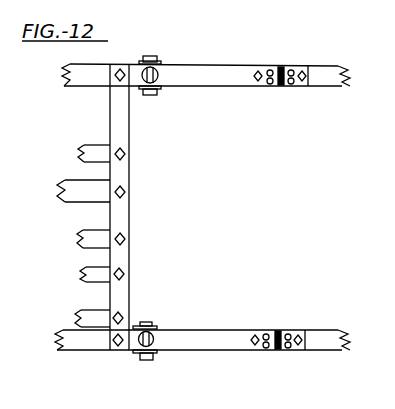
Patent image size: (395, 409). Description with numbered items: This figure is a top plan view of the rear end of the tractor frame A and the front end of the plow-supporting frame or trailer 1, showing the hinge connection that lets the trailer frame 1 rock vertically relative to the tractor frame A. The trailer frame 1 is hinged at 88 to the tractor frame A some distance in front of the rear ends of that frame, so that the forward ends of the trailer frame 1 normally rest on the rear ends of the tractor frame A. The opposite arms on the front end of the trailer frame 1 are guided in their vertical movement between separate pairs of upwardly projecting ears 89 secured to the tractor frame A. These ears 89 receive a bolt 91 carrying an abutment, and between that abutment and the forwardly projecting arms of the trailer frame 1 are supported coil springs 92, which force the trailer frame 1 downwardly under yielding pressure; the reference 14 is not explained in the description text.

The plow-supporting frame or trailer 1 is at (103, 237).
The bolt 14 is at (147, 322).
The hinge 88 is at (283, 86).
The upwardly projecting ears 89 is at (160, 60).
The bolt 91 is at (150, 96).
The coil springs 92 is at (145, 57).
The tractor frame A is at (336, 88).